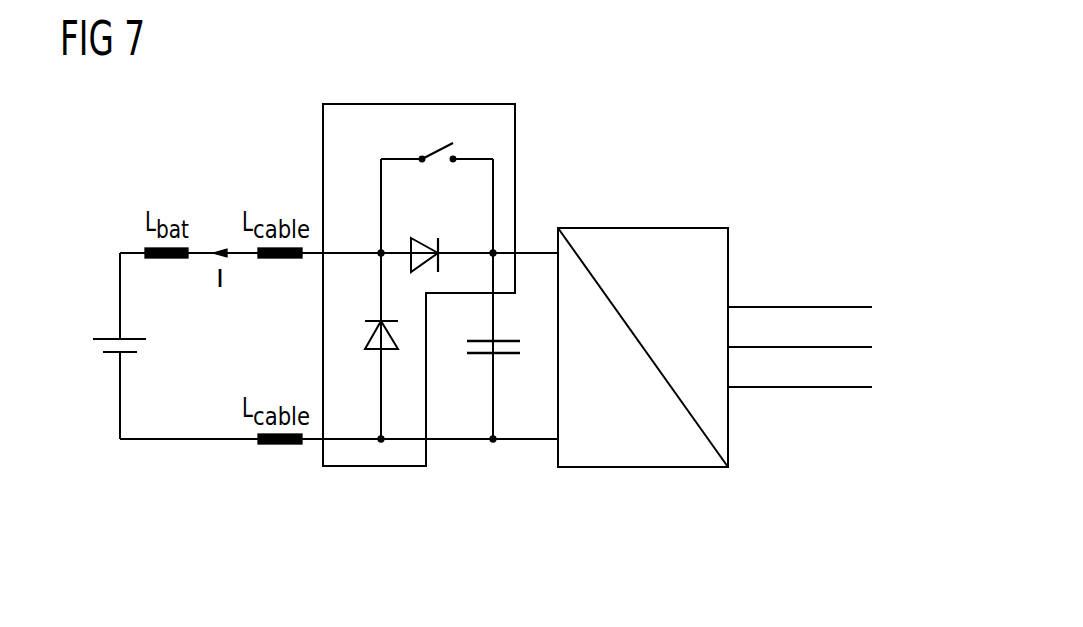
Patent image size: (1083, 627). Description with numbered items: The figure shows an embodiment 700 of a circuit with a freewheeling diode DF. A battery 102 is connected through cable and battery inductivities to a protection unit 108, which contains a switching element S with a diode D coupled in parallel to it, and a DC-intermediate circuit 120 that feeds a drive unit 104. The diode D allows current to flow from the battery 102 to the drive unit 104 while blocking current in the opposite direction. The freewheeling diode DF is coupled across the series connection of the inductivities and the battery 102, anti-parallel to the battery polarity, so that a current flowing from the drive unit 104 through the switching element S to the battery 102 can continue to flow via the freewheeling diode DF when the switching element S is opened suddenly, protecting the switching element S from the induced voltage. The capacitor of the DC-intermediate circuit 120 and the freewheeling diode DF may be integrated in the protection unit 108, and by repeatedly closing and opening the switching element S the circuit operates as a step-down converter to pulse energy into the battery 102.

The battery 102 is at (113, 367).
The drive unit 104 is at (545, 494).
The protection unit 108 is at (515, 133).
The DC-intermediate circuit 120 is at (481, 363).
The embodiment of a circuit with a freewheeling diode 700 is at (335, 496).
The switching element S is at (433, 142).
The diode D is at (425, 237).
The freewheeling diode DF is at (372, 356).